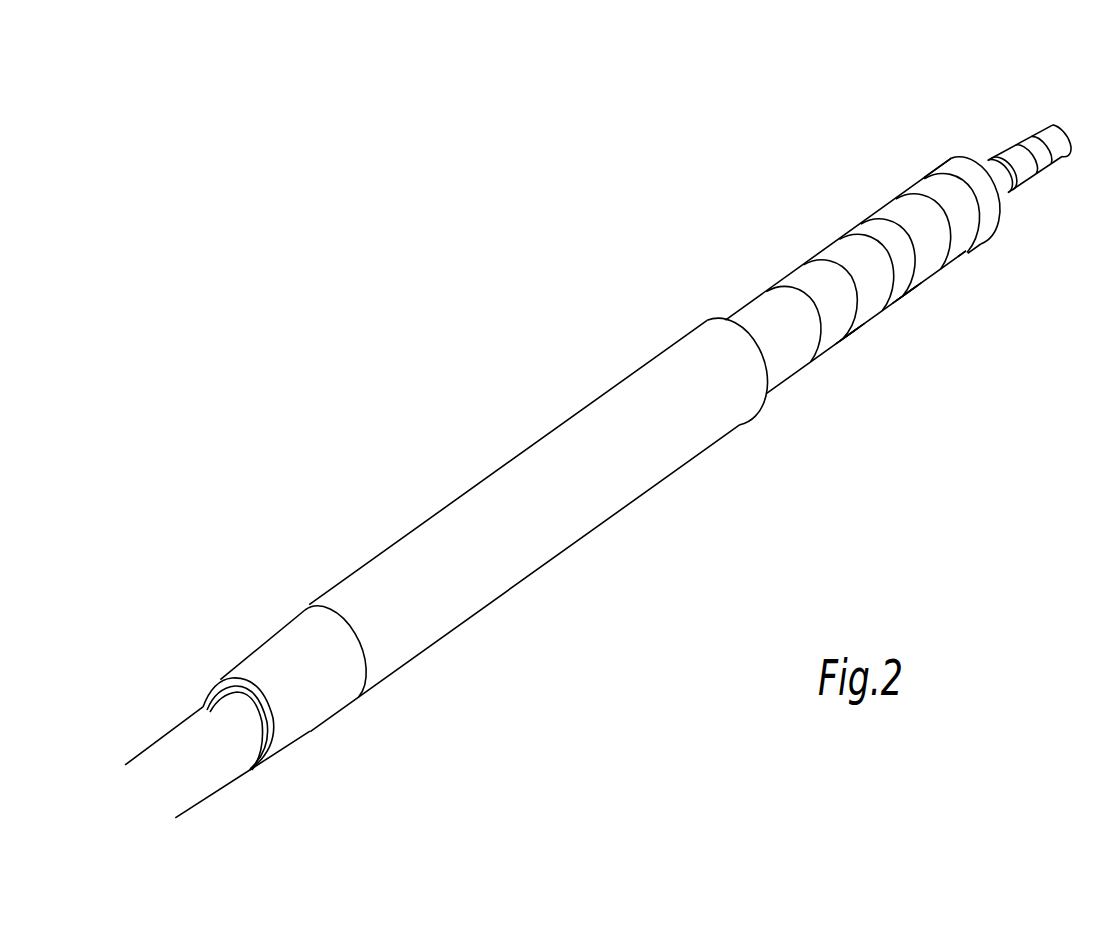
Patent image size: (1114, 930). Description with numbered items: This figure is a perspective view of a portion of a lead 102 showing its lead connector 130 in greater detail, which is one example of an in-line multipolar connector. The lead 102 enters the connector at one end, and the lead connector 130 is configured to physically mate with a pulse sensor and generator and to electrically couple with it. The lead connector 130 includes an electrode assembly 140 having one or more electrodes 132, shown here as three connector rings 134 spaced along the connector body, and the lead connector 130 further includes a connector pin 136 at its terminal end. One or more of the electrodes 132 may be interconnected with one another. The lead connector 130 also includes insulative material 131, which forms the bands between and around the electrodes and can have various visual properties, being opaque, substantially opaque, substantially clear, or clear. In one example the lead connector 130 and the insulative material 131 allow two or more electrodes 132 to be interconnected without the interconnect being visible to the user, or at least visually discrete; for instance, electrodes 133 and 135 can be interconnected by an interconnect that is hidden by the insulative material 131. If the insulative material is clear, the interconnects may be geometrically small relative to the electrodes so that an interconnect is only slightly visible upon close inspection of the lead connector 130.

The lead 102 is at (207, 794).
The lead connector 130 is at (390, 316).
The insulative material 131 is at (763, 289).
The electrodes 132 is at (790, 272).
The electrode 133 is at (853, 346).
The connector rings 134 is at (837, 317).
The electrode 135 is at (910, 297).
The connector pin 136 is at (1030, 136).
The electrode assembly 140 is at (968, 251).